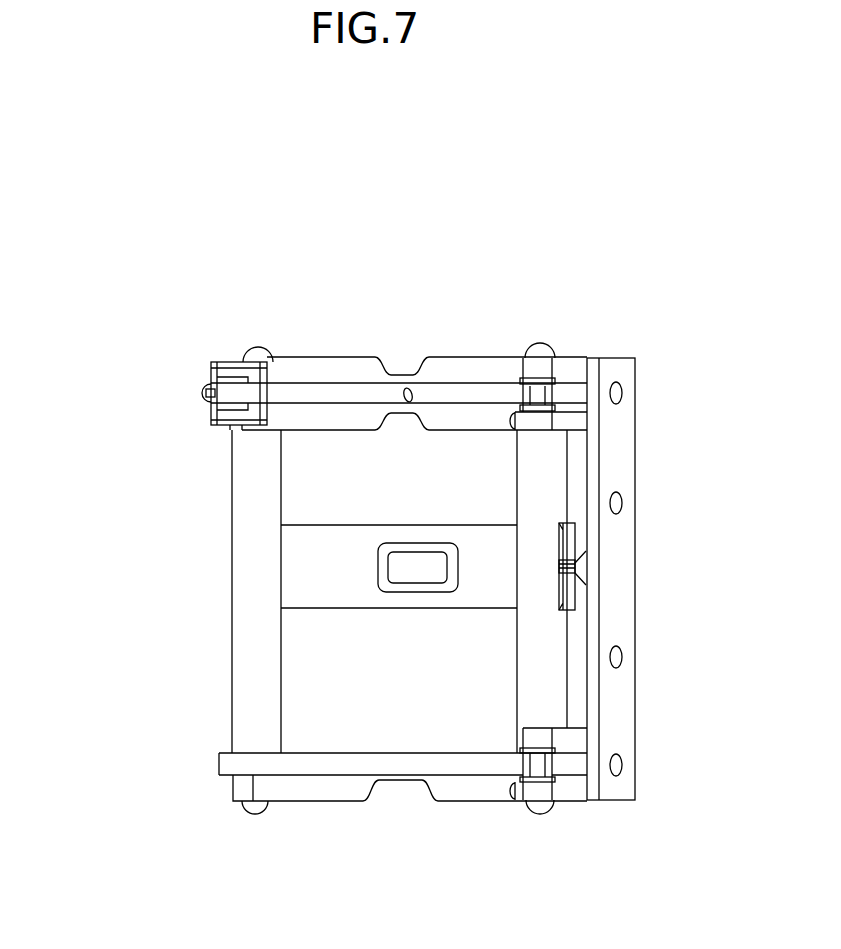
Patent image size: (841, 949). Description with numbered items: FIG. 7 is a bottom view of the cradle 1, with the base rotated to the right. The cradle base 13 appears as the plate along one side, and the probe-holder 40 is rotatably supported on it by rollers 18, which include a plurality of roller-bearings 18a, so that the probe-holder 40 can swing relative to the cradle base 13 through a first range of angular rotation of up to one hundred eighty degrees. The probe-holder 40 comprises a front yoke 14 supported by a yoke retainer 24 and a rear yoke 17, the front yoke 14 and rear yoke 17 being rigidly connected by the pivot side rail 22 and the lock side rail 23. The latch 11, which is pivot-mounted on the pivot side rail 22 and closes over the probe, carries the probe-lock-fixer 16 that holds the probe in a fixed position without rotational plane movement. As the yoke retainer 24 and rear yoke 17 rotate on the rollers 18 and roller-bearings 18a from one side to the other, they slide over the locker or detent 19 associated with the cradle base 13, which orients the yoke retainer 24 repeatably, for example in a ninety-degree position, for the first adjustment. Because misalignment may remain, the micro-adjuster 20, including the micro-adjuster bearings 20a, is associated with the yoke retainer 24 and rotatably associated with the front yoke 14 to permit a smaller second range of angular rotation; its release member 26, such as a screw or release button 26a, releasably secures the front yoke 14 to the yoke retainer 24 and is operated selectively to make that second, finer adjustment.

The cradle 1 is at (172, 698).
The latch 11 is at (422, 523).
The cradle base 13 is at (617, 475).
The front yoke 14 is at (360, 362).
The probe-lock-fixer 16 is at (425, 572).
The rear yoke 17 is at (320, 793).
The rollers 18 is at (543, 395).
The roller-bearings 18a is at (540, 386).
The locker (detent) 19 is at (412, 392).
The micro-adjuster 20 is at (224, 367).
The micro-adjuster bearings 20a is at (232, 367).
The pivot side rail 22 is at (235, 555).
The lock side rail 23 is at (523, 635).
The yoke retainer 24 is at (297, 392).
The release member 26 is at (193, 383).
The screw or release button 26a is at (203, 397).
The probe-holder 40 is at (505, 338).